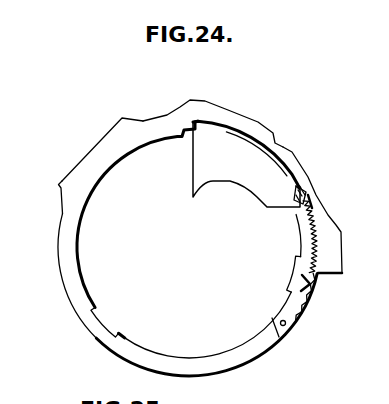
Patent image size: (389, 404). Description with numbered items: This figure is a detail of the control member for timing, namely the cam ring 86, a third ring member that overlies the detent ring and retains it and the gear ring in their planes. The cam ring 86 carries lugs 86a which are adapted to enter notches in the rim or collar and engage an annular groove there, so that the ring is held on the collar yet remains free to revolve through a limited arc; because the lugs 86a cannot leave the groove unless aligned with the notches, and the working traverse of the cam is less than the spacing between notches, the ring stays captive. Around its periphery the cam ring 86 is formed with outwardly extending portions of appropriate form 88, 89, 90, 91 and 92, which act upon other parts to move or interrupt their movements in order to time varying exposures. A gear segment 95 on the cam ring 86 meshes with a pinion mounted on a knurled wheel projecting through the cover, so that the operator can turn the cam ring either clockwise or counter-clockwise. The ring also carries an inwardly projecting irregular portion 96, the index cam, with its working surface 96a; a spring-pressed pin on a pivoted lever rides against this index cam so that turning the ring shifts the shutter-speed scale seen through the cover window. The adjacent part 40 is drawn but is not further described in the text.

The housing 40 is at (388, 369).
The cam ring 86 is at (73, 288).
The lugs 86a is at (116, 318).
The outwardly extending portion 88 is at (60, 186).
The outwardly extending portion 89 is at (122, 118).
The outwardly extending portion 90 is at (235, 95).
The outwardly extending portion 91 is at (323, 208).
The outwardly extending portion 92 is at (341, 248).
The gear segment 95 is at (312, 293).
The index cam 96 is at (259, 203).
The cam edge 96a is at (253, 137).